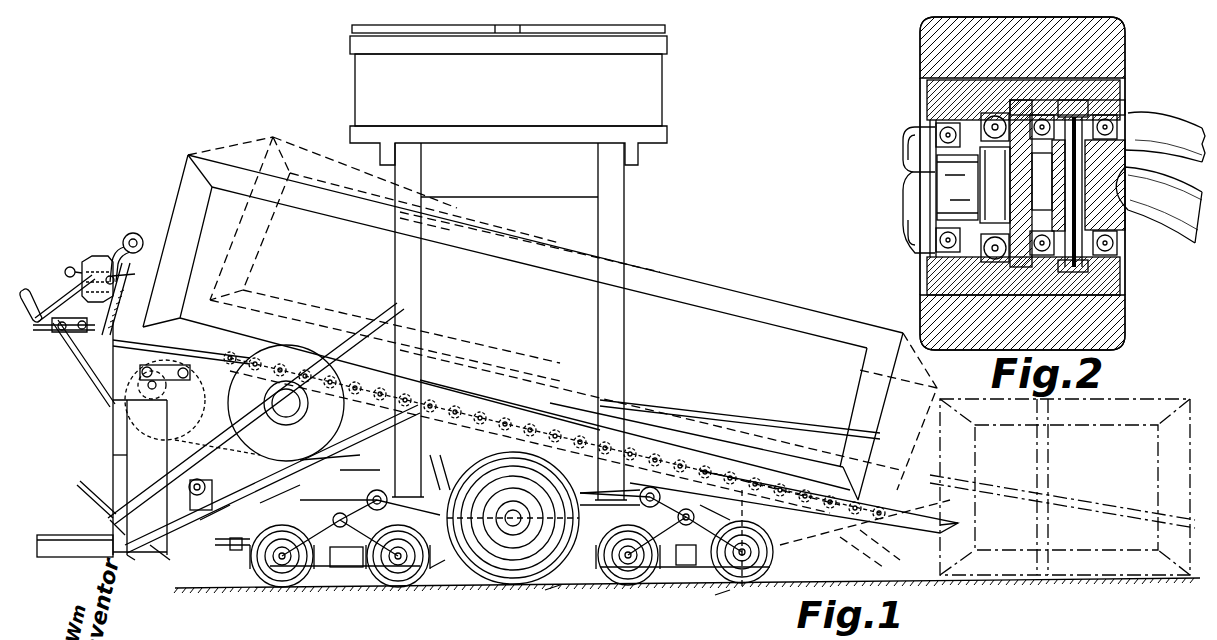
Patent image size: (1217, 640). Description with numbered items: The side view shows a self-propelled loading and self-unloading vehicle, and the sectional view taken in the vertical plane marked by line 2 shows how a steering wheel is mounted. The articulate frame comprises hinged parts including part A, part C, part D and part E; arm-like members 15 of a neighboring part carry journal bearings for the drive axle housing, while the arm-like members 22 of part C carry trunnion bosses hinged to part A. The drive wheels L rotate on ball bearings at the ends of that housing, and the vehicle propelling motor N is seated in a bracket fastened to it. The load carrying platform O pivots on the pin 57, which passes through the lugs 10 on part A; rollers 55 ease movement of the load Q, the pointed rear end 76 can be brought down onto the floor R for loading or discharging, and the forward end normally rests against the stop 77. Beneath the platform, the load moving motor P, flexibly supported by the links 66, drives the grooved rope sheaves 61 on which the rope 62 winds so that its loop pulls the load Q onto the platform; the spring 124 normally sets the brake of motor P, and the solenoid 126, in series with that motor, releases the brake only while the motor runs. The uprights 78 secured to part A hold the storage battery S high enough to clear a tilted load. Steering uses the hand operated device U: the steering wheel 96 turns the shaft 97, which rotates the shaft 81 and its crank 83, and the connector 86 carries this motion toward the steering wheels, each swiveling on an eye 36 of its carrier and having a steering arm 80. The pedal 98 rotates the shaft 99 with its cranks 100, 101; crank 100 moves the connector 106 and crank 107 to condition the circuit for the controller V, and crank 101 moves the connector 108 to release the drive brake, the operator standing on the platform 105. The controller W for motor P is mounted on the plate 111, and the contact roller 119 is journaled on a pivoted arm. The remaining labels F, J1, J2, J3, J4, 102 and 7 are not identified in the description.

In FIG. 1, the electric storage battery S is at (508, 95).
In FIG. 1, the uprights 78 is at (509, 321).
In FIG. 1, the stop 77 is at (150, 307).
In FIG. 1, the links 66 is at (181, 343).
In FIG. 1, the load Q is at (750, 450).
In FIG. 1, the rope 62 is at (790, 425).
In FIG. 1, the rollers 55 is at (770, 480).
In FIG. 1, the lugs 10 is at (554, 435).
In FIG. 1, the pin 57 is at (530, 420).
In FIG. 1, the solenoid 126 is at (256, 413).
In FIG. 1, the rotatable shaft 81 is at (272, 479).
In FIG. 1, the crank 83 is at (219, 516).
In FIG. 1, the connector 108 is at (280, 497).
In FIG. 1, the link 102 is at (340, 468).
In FIG. 1, the grooved rope sheaves 61 is at (286, 403).
In FIG. 1, the drive wheels L is at (513, 534).
In FIG. 1, the arm-like members 15 is at (443, 574).
In FIG. 1, the frame F is at (552, 596).
In FIG. 1, the first truck wheel J1 is at (282, 568).
In FIG. 1, the second truck wheel J2 is at (398, 570).
In FIG. 1, the third truck wheel J3 is at (629, 569).
In FIG. 1, the fourth truck wheel J4 is at (742, 545).
In FIG. 1, the frame part D is at (355, 528).
In FIG. 1, the connector 86 is at (228, 555).
In FIG. 1, the frame part A is at (620, 488).
In FIG. 1, the frame part C is at (685, 532).
In FIG. 1, the frame part E is at (715, 507).
In FIG. 1, the arm-like members 22 is at (610, 509).
In FIG. 1, the load carrying platform O is at (790, 505).
In FIG. 1, the end of platform 76 is at (947, 528).
In FIG. 1, the vehicle propelling motor N is at (440, 472).
In FIG. 1, the floor R is at (1000, 578).
In FIG. 1, the controller W is at (89, 268).
In FIG. 1, the contact roller 119 is at (126, 247).
In FIG. 1, the steering wheel 96 is at (70, 297).
In FIG. 1, the plate 111 is at (134, 271).
In FIG. 1, the shaft 97 is at (95, 375).
In FIG. 1, the load moving motor P is at (165, 400).
In FIG. 1, the hand operated device U is at (110, 432).
In FIG. 1, the controller V is at (113, 445).
In FIG. 1, the crank 107 is at (113, 472).
In FIG. 1, the pedal 98 is at (77, 500).
In FIG. 1, the crank 101 is at (113, 530).
In FIG. 1, the platform 105 is at (75, 546).
In FIG. 1, the shaft 99 is at (138, 566).
In FIG. 1, the crank 100 is at (170, 560).
In FIG. 1, the spring 124 is at (217, 458).
In FIG. 1, the connector 106 is at (187, 494).
In FIG. 1, the section line 2 is at (722, 603).
In FIG. 2, the wheel hub housing 7 is at (935, 45).
In FIG. 2, the steering arm 80 is at (1165, 137).
In FIG. 2, the eye 36 is at (1100, 182).